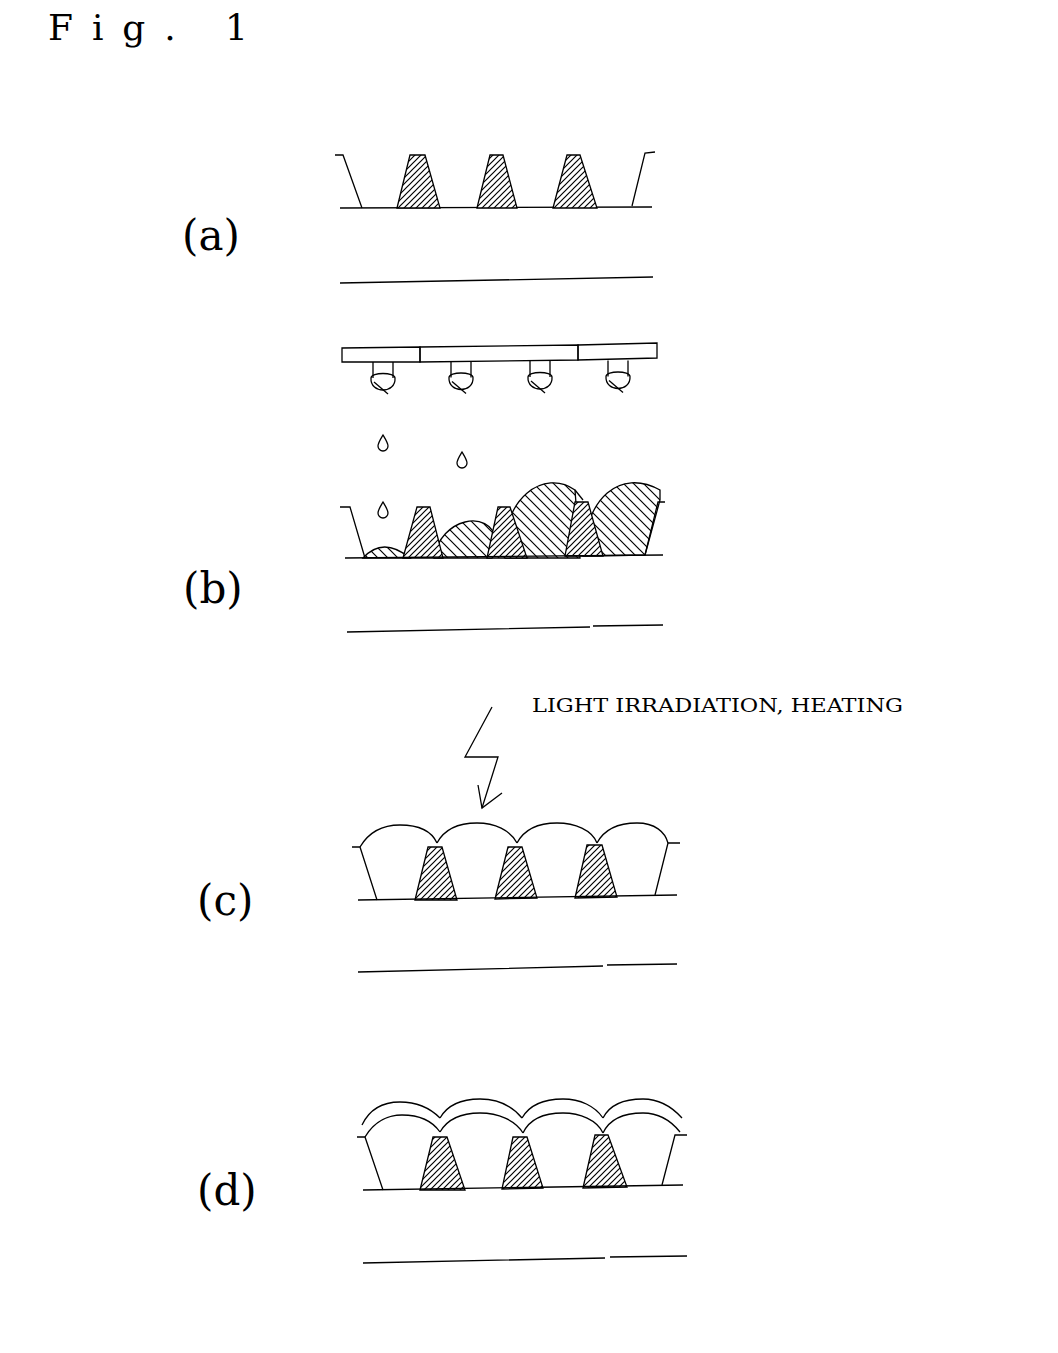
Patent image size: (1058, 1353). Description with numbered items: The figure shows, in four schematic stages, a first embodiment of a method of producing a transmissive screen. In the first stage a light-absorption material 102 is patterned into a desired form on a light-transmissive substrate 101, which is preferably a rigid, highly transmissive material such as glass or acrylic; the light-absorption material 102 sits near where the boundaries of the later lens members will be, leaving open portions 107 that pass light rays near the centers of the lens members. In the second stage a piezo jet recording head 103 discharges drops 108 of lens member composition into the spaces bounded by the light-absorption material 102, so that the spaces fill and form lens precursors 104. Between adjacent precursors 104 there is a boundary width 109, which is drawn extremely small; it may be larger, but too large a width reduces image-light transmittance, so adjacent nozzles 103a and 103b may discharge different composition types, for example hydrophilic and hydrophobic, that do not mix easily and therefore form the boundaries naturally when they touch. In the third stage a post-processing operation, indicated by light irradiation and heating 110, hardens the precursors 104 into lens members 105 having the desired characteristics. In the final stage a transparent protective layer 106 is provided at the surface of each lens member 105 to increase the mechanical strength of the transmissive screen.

The light-transmissive substrate 101 is at (620, 248).
The light-absorption material 102 is at (583, 167).
The piezo jet recording head 103 is at (557, 346).
The nozzle 103a is at (540, 352).
The nozzle 103b is at (613, 352).
The lens precursor 104 is at (660, 485).
The lens member 105 is at (640, 843).
The transparent protective layer 106 is at (473, 1110).
The open portion 107 is at (533, 203).
The lens member composition drops 108 is at (377, 442).
The boundary width 109 is at (582, 500).
The light irradiation 110 is at (478, 733).